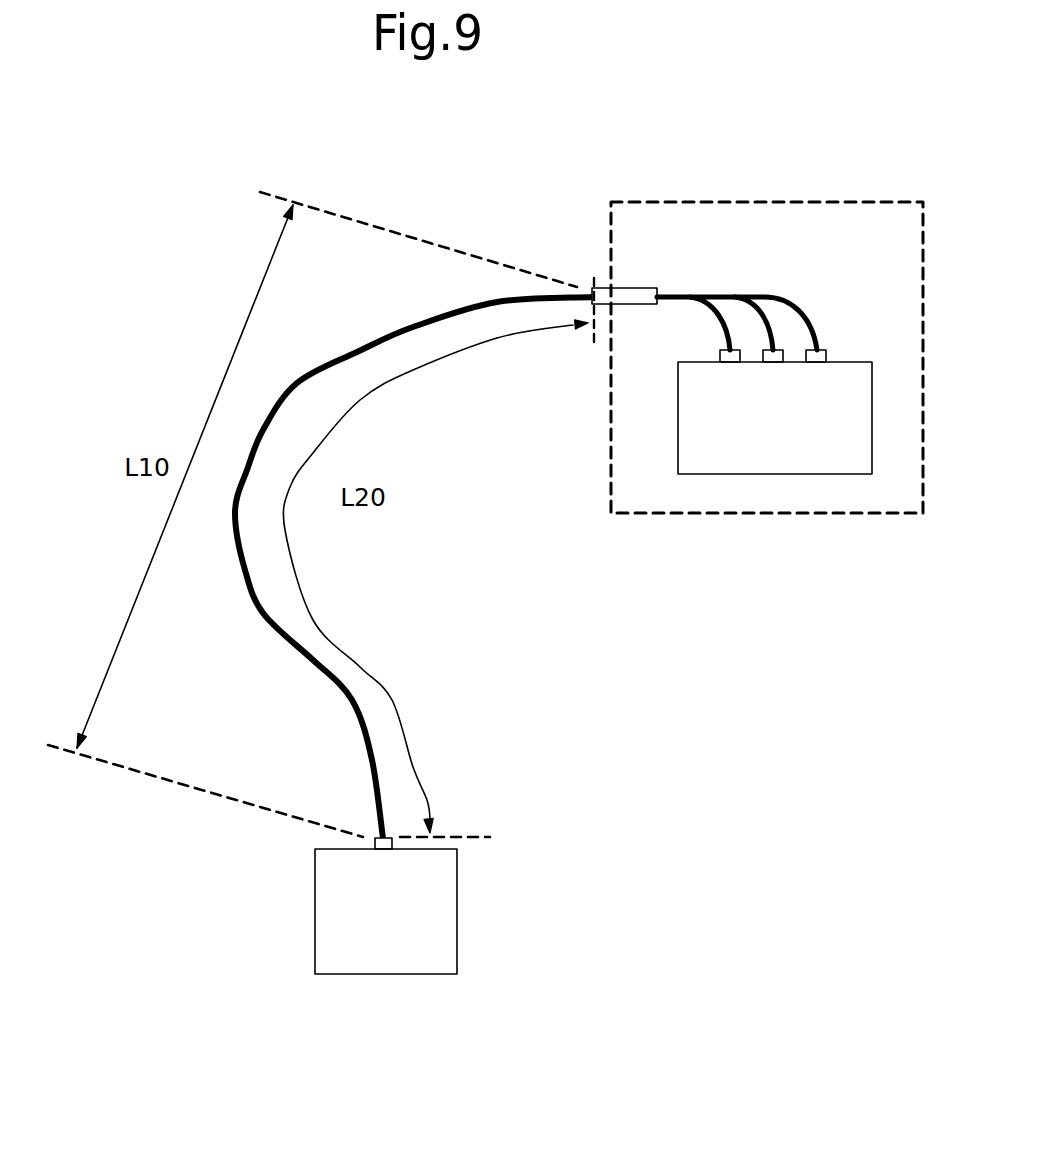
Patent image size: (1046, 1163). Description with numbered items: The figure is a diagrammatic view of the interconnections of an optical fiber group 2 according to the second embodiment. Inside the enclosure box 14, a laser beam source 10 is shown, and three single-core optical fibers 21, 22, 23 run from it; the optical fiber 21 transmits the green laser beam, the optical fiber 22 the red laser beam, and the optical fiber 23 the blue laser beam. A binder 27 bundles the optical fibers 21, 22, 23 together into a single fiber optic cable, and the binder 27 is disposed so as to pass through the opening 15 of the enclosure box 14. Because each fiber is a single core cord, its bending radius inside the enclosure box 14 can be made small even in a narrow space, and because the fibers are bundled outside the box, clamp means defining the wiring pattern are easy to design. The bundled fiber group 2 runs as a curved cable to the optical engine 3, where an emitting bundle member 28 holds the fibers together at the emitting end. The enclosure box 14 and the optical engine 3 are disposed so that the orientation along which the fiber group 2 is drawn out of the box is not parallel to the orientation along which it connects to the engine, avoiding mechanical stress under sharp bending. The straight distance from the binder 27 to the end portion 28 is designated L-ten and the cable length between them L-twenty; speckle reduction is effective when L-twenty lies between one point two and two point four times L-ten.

The optical fiber group 2 is at (357, 352).
The optical engine 3 is at (402, 922).
The laser beam source 10 is at (777, 428).
The enclosure box 14 is at (700, 513).
The opening 15 is at (594, 306).
The optical fiber 21 is at (718, 320).
The optical fiber 22 is at (763, 322).
The optical fiber 23 is at (808, 320).
The binder 27 is at (620, 288).
The emitting bundle member 28 is at (365, 843).